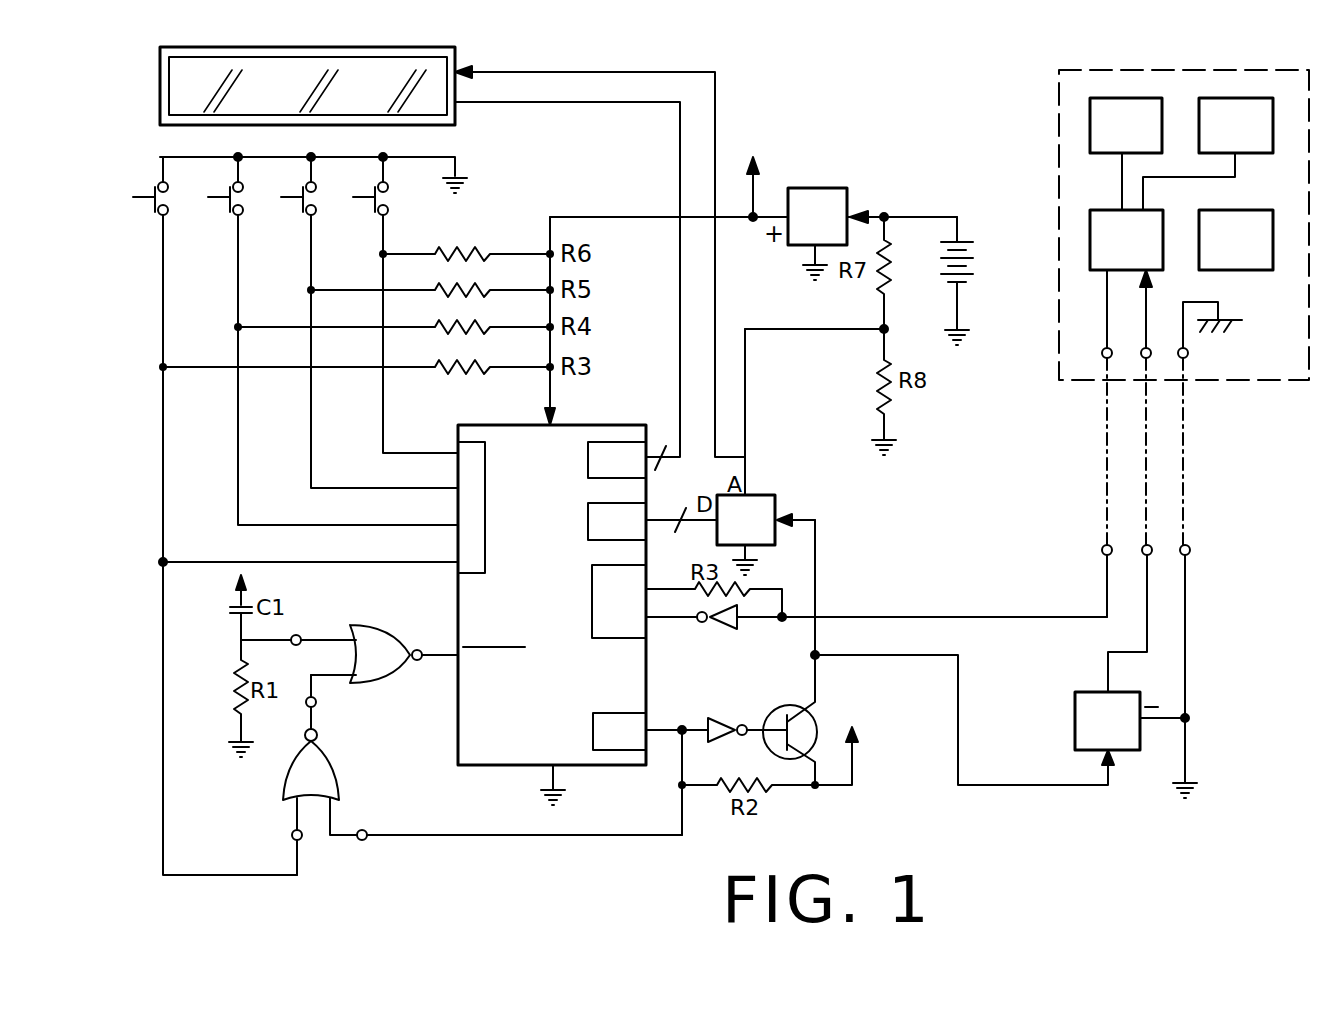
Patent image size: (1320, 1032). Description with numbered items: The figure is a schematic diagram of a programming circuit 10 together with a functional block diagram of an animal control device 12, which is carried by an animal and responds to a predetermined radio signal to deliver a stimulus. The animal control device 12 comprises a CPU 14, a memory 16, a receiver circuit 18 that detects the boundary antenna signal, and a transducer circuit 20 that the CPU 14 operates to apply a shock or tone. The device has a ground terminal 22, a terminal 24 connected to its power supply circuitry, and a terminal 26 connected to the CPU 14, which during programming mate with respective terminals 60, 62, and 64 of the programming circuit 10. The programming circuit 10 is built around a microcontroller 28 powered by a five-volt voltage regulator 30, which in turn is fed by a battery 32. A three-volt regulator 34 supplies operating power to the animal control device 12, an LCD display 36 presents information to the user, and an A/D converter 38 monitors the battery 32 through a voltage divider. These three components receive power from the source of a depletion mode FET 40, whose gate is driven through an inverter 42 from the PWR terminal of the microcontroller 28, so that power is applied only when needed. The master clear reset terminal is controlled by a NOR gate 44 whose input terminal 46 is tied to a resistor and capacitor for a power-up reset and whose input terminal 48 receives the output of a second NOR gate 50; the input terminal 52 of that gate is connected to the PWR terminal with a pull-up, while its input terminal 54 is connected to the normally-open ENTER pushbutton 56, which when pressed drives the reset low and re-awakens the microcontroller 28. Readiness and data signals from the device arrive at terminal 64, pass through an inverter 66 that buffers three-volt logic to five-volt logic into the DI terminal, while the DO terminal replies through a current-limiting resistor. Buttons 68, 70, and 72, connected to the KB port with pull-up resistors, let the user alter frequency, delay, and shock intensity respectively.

The programming circuit 10 is at (887, 150).
The animal control device 12 is at (1088, 68).
The CPU 14 is at (1097, 212).
The memory 16 is at (1146, 100).
The receiver circuit 18 is at (1262, 100).
The transducer circuit 20 is at (1252, 212).
The ground terminal 22 is at (1188, 355).
The terminal 24 is at (1140, 352).
The terminal 26 is at (1100, 352).
The microcontroller 28 is at (552, 578).
The voltage regulator 30 is at (817, 192).
The battery 32 is at (966, 240).
The 3-volt regulator 34 is at (1086, 700).
The LCD display 36 is at (452, 62).
The A/D converter 38 is at (762, 494).
The depletion mode FET 40 is at (812, 714).
The inverter 42 is at (722, 718).
The NOR gate 44 is at (378, 630).
The input terminal 46 is at (298, 634).
The input terminal 48 is at (318, 703).
The NOR gate 50 is at (330, 782).
The input terminal 52 is at (364, 841).
The input terminal 54 is at (292, 835).
The pushbutton 56 is at (155, 190).
The terminal 60 is at (1191, 552).
The terminal 62 is at (1150, 546).
The terminal 64 is at (1101, 550).
The inverter 66 is at (728, 622).
The button 68 is at (230, 190).
The button 70 is at (303, 190).
The button 72 is at (375, 190).